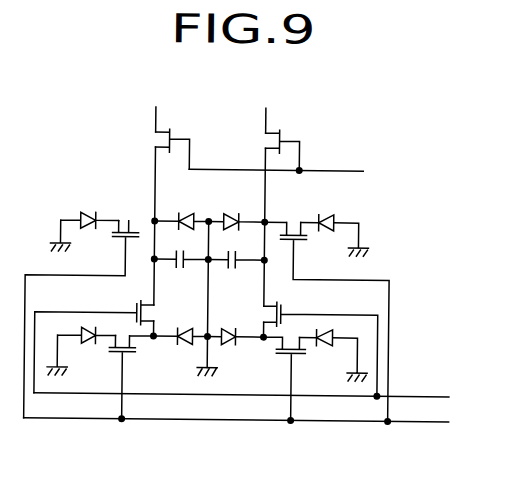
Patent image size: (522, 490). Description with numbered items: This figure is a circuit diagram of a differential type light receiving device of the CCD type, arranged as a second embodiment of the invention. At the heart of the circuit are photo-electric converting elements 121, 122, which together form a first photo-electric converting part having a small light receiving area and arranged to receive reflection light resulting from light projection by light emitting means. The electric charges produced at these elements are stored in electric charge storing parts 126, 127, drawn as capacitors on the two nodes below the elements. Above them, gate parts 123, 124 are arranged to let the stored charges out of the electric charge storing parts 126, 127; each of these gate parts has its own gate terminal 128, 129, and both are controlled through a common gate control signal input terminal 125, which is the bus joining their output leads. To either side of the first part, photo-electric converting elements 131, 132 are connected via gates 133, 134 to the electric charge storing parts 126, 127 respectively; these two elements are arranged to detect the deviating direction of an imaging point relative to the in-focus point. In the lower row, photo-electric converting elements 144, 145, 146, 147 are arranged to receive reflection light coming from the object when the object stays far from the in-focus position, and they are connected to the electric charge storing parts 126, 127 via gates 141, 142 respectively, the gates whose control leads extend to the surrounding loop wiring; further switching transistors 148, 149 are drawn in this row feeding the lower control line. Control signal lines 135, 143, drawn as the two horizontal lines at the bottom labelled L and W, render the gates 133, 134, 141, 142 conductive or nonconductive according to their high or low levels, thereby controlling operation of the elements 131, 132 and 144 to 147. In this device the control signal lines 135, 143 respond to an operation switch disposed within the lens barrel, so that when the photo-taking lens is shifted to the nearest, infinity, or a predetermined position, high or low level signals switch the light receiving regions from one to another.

The photo-electric converting element 121 is at (184, 216).
The photo-electric converting element 122 is at (232, 216).
The gate part 123 is at (170, 135).
The gate part 124 is at (280, 136).
The gate control signal input terminal 125 is at (333, 170).
The electric charge storing part 126 is at (176, 272).
The electric charge storing part 127 is at (234, 272).
The gate terminal 128 is at (154, 118).
The gate terminal 129 is at (264, 118).
The photo-electric converting element 131 is at (92, 212).
The photo-electric converting element 132 is at (334, 221).
The gate 133 is at (128, 220).
The gate 134 is at (290, 228).
The control signal line 135 is at (418, 422).
The gate 141 is at (138, 306).
The gate 142 is at (278, 307).
The control signal line 143 is at (418, 395).
The photo-electric converting element 144 is at (190, 350).
The photo-electric converting element 145 is at (228, 350).
The photo-electric converting element 146 is at (90, 346).
The photo-electric converting element 147 is at (328, 344).
The transistor 148 is at (134, 353).
The transistor 149 is at (284, 351).